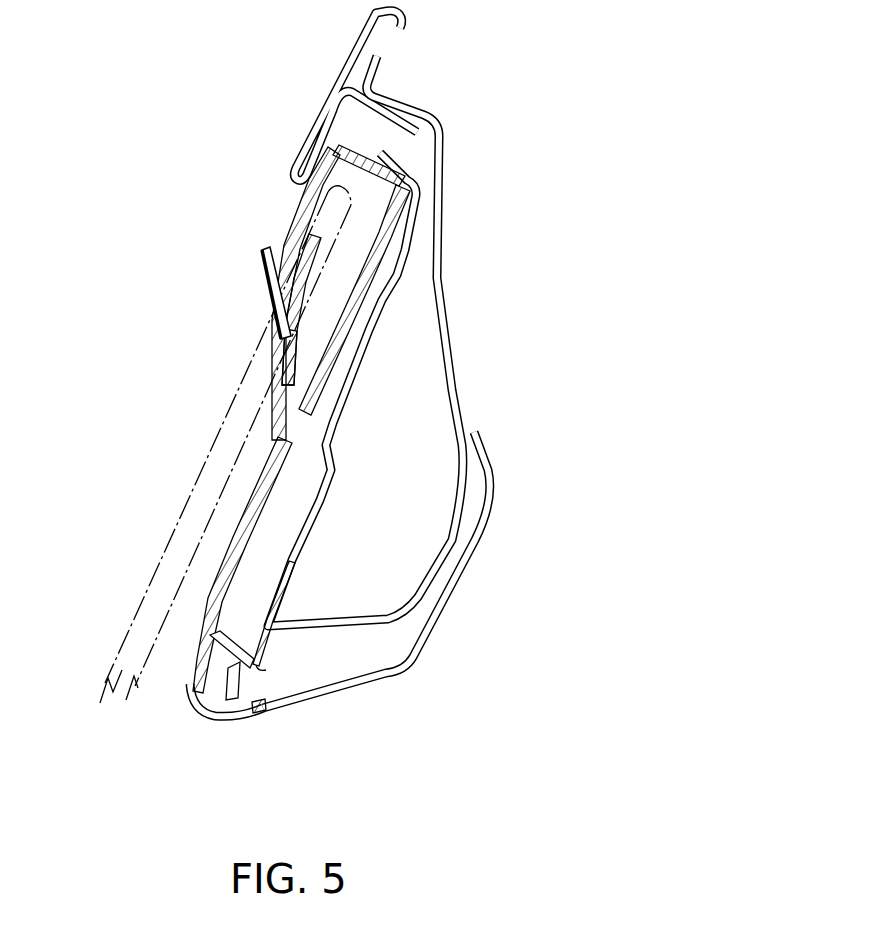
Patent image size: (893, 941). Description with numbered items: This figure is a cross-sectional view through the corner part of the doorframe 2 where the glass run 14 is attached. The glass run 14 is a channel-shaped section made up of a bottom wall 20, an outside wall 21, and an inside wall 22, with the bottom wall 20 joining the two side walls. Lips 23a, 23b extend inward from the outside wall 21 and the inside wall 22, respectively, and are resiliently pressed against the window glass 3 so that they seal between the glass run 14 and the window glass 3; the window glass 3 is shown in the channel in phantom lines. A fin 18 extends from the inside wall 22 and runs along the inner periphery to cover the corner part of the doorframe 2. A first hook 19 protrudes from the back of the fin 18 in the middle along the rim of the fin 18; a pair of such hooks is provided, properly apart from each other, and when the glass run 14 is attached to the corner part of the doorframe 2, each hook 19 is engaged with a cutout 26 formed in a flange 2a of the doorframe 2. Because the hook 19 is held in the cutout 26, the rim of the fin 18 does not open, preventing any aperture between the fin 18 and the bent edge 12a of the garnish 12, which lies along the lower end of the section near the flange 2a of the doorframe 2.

The doorframe 2 is at (457, 380).
The flange 2a is at (268, 648).
The window glass 3 is at (223, 432).
The garnish 12 is at (337, 690).
The bent edge 12a is at (212, 713).
The glass run 14 is at (252, 261).
The fin 18 is at (256, 513).
The first hooks 19 is at (227, 650).
The bottom wall 20 is at (380, 157).
The outside wall 21 is at (297, 217).
The inside wall 22 is at (353, 311).
The lip 23a is at (278, 300).
The lip 23b is at (283, 351).
The cutout 26 is at (250, 720).